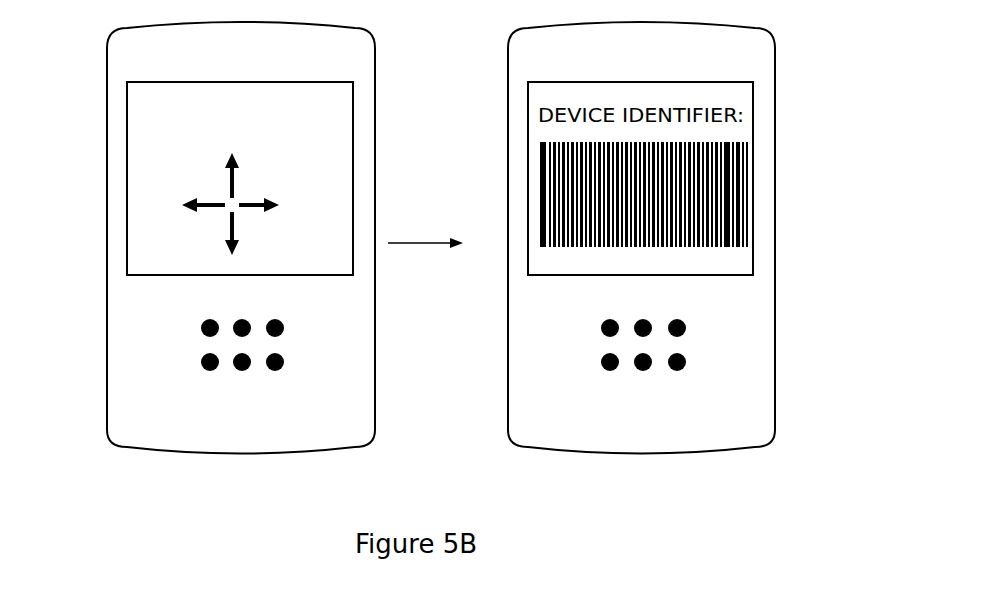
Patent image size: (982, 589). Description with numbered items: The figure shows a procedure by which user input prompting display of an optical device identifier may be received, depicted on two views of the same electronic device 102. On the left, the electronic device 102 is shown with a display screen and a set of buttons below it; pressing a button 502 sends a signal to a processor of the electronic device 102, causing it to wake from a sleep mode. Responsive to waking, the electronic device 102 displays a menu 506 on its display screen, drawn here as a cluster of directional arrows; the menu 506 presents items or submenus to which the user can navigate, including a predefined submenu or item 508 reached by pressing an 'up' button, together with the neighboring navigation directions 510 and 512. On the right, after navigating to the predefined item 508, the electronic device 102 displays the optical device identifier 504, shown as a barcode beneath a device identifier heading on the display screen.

The electronic device 102 is at (258, 484).
The button 502 is at (612, 366).
The optical device identifier 504 is at (736, 165).
The menu 506 is at (192, 235).
The predefined submenu or item 508 is at (281, 174).
The right arrow 510 is at (317, 216).
The down arrow 512 is at (279, 259).